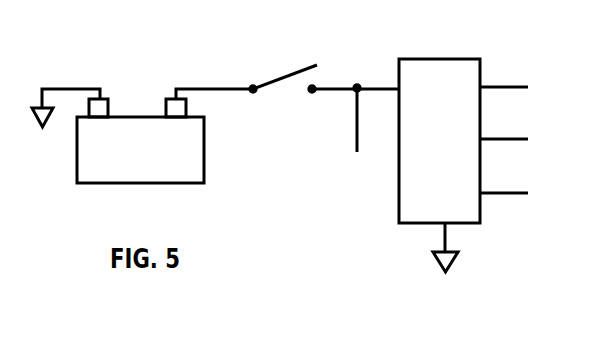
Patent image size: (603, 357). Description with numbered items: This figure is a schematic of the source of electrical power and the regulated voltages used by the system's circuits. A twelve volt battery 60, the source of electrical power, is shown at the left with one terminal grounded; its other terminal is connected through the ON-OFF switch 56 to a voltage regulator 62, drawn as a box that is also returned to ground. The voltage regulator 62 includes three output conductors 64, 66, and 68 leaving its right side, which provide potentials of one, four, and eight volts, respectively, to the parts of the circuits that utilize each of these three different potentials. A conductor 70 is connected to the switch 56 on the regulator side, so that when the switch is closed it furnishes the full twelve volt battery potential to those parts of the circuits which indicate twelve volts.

The ON-OFF switch 56 is at (280, 72).
The twelve volt battery 60 is at (151, 162).
The voltage regulator 62 is at (439, 165).
The output conductor 64 is at (497, 85).
The output conductor 66 is at (502, 140).
The output conductor 68 is at (495, 192).
The conductor 70 is at (357, 134).